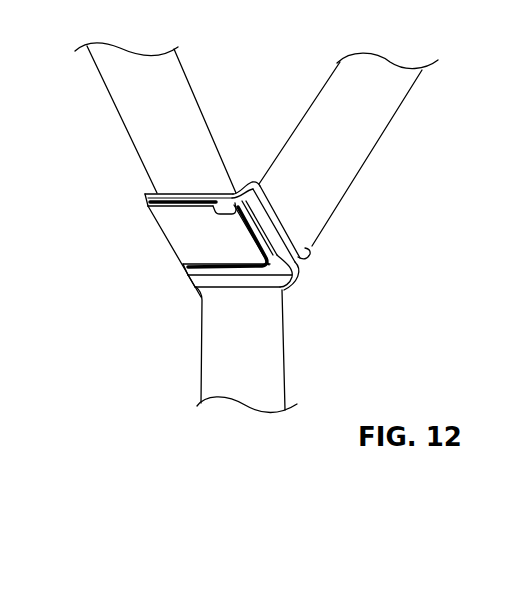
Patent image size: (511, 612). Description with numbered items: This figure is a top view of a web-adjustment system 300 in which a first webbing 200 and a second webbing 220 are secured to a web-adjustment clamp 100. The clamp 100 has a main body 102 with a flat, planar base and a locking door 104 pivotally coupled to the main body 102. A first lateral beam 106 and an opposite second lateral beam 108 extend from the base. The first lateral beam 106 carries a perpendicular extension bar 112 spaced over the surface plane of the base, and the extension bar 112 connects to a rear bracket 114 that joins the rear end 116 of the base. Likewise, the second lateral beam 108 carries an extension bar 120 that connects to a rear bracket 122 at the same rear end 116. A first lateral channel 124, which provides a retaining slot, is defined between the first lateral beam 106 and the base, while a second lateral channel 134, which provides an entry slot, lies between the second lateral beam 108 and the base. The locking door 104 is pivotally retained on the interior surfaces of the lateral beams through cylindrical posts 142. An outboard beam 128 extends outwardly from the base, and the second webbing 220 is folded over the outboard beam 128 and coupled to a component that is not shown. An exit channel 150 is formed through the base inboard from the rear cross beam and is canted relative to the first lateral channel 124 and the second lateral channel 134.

The web-adjustment system 300 is at (418, 41).
The first webbing 200 is at (191, 90).
The second webbing 220 is at (284, 362).
The web-adjustment clamp 100 is at (262, 243).
The second lateral channel 134 is at (168, 187).
The extension bar 120 is at (148, 200).
The second lateral beam 108 is at (214, 202).
The cylindrical posts 142 is at (243, 183).
The locking door 104 is at (172, 218).
The rear bracket 122 is at (258, 178).
The exit channel 150 is at (320, 254).
The main body 102 is at (316, 267).
The rear end 116 is at (310, 276).
The rear bracket 114 is at (300, 283).
The outboard beam 128 is at (290, 293).
The extension bar 112 is at (263, 275).
The first lateral beam 106 is at (216, 275).
The first lateral channel 124 is at (227, 296).